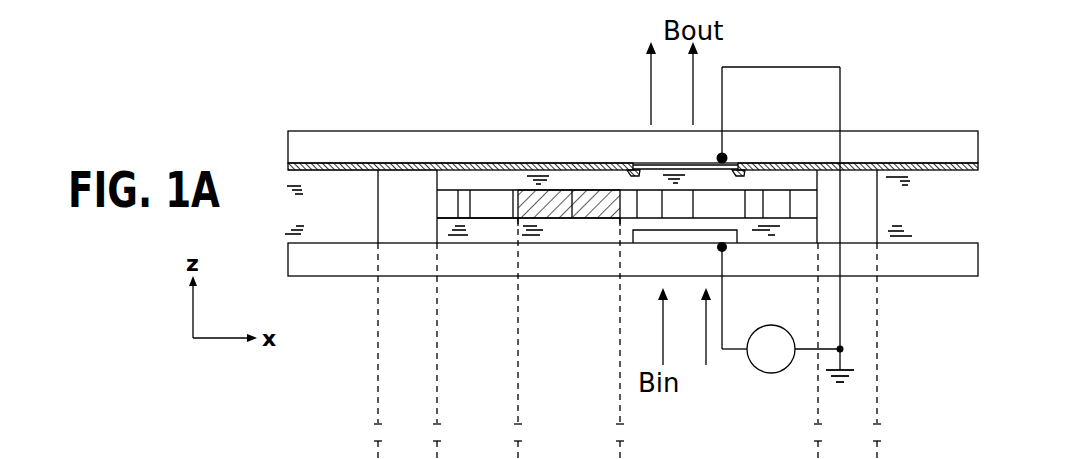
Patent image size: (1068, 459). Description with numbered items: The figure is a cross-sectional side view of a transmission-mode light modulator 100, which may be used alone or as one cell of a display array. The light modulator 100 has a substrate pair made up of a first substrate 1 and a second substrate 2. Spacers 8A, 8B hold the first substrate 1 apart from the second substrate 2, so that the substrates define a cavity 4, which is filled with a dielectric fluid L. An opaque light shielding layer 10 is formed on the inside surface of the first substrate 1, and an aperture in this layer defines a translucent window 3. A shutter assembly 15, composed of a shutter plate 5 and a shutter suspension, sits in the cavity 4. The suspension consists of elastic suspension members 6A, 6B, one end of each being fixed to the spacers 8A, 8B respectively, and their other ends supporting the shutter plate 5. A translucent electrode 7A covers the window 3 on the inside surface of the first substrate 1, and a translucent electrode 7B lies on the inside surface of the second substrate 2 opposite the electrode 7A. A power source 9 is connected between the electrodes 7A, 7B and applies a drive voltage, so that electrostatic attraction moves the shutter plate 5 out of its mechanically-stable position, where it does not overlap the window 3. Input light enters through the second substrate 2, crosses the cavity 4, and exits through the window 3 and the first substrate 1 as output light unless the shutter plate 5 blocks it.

The first substrate 1 is at (313, 150).
The second substrate 2 is at (313, 262).
The translucent window 3 is at (630, 150).
The cavity 4 is at (485, 234).
The shutter plate 5 is at (572, 190).
The elastic suspension member 6A is at (490, 190).
The elastic suspension member 6B is at (668, 243).
The electrode 7A is at (672, 142).
The electrode 7B is at (684, 248).
The spacer 8A is at (397, 196).
The spacer 8B is at (858, 212).
The power source 9 is at (771, 374).
The light shielding layer 10 is at (293, 171).
The shutter assembly 15 is at (806, 204).
The light modulator 100 is at (898, 114).
The dielectric fluid L is at (509, 232).